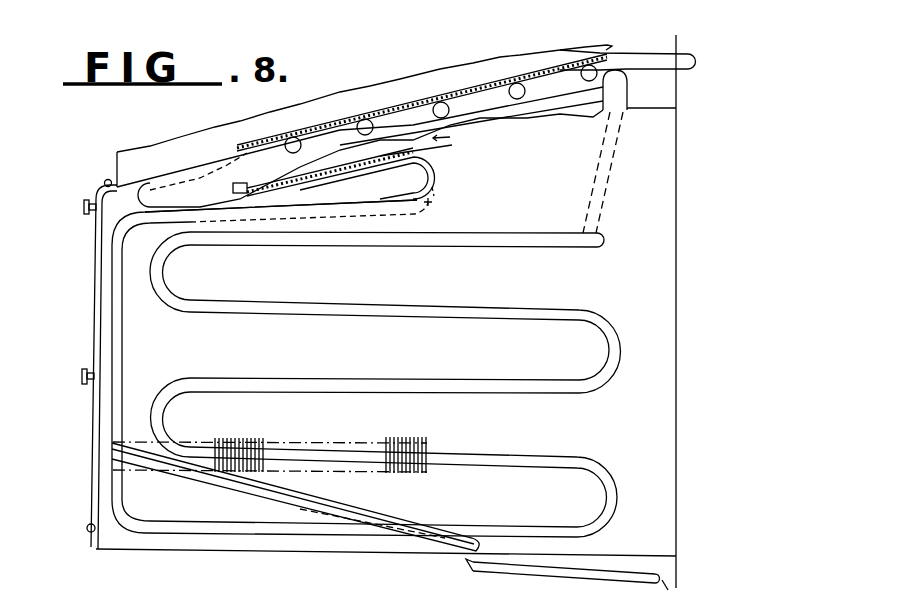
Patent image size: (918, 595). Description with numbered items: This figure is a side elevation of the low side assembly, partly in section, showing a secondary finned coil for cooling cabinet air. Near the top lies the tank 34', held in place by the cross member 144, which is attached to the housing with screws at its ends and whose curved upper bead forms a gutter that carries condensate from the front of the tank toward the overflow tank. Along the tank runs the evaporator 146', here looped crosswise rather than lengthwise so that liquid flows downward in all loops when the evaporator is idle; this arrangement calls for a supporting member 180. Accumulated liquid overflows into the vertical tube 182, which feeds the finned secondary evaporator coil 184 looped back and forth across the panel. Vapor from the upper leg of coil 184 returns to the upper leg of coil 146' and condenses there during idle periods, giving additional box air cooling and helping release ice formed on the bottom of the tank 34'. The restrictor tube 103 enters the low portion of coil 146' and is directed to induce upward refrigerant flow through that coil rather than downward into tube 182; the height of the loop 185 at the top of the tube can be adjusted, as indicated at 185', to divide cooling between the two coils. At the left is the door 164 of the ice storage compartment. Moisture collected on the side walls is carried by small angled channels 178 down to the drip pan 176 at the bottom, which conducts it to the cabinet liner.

The tank 34' is at (364, 126).
The evaporator 146' is at (422, 103).
The supporting member 180 is at (518, 141).
The restrictor tube 103 is at (453, 147).
The loop 185 is at (318, 180).
The adjusted loop position 185' is at (343, 204).
The cross member 144 is at (104, 183).
The door 164 is at (95, 275).
The vertical tube 182 is at (120, 352).
The finned secondary evaporator coil 184 is at (437, 455).
The channels 178 is at (350, 502).
The drip pan 176 is at (468, 563).